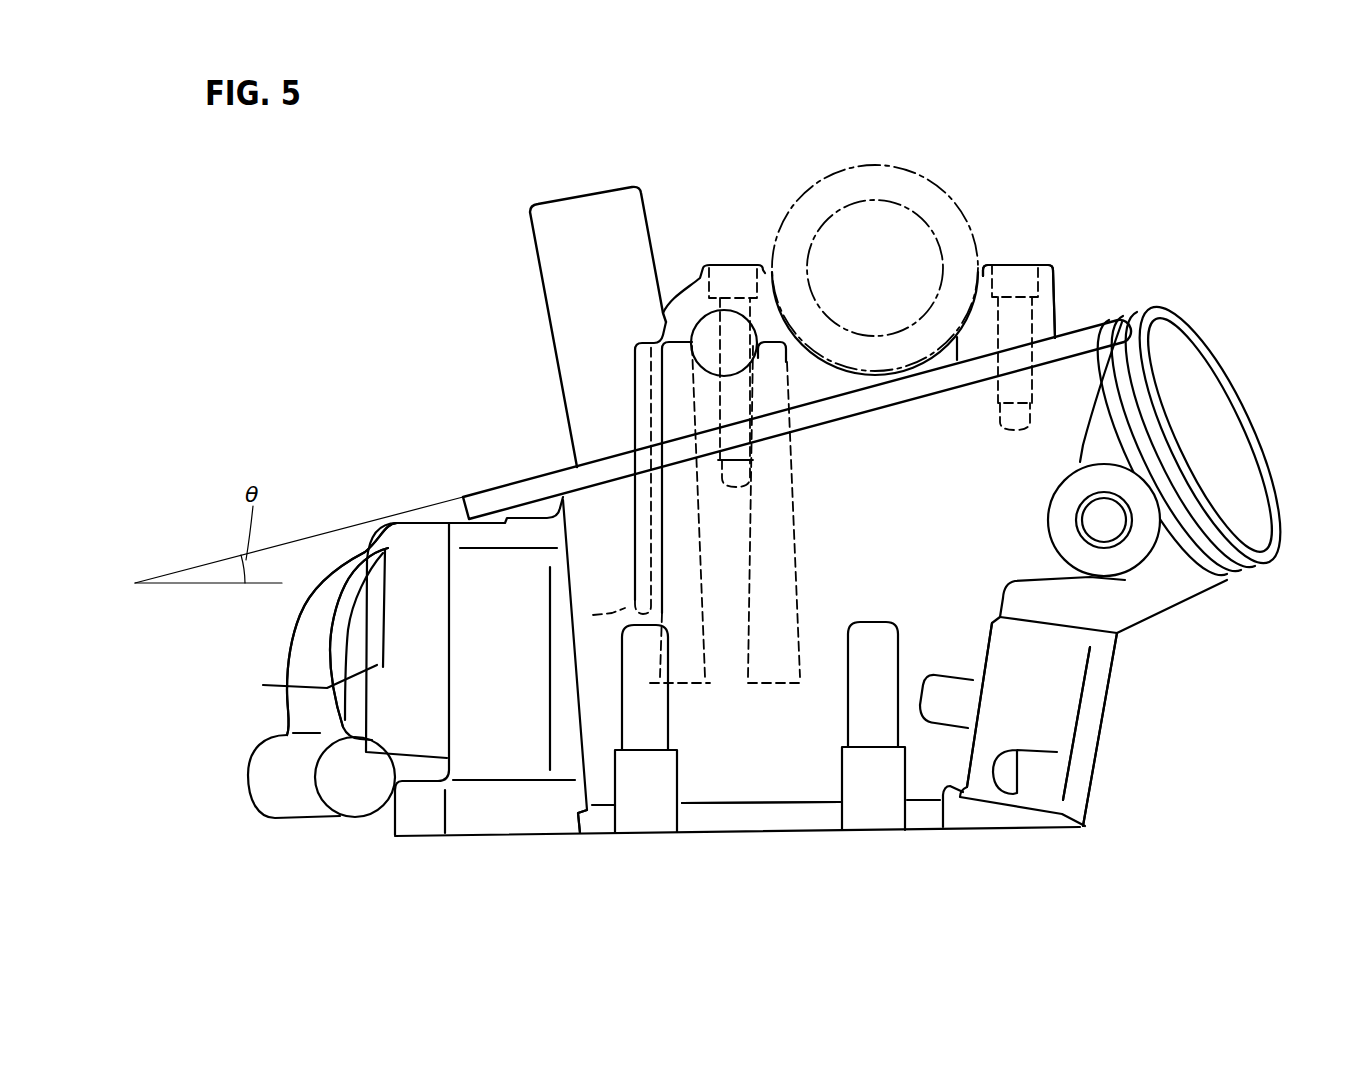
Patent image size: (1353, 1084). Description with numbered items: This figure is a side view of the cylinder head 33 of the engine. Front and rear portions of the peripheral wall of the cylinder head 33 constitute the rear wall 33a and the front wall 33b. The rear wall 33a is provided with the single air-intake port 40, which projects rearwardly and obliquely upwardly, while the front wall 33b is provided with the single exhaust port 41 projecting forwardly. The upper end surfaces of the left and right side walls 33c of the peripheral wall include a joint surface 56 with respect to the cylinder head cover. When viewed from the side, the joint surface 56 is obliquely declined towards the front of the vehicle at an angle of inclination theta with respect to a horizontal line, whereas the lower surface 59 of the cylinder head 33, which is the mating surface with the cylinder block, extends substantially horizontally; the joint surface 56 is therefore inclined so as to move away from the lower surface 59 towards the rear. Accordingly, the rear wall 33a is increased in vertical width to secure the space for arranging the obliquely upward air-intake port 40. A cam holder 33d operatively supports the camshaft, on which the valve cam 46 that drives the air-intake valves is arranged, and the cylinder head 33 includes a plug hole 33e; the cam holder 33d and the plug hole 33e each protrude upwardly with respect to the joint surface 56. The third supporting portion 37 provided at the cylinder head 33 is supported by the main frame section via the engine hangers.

The cylinder head 33 is at (386, 505).
The rear wall 33a is at (1098, 703).
The front wall 33b is at (263, 685).
The side walls 33c is at (727, 748).
The cam holder 33d is at (1043, 263).
The plug hole 33e is at (552, 238).
The third supporting portion 37 is at (1127, 537).
The air-intake port 40 is at (1210, 405).
The exhaust port 41 is at (313, 650).
The valve cam 46 is at (875, 172).
The joint surface 56 is at (512, 487).
The lower surface 59 is at (598, 827).